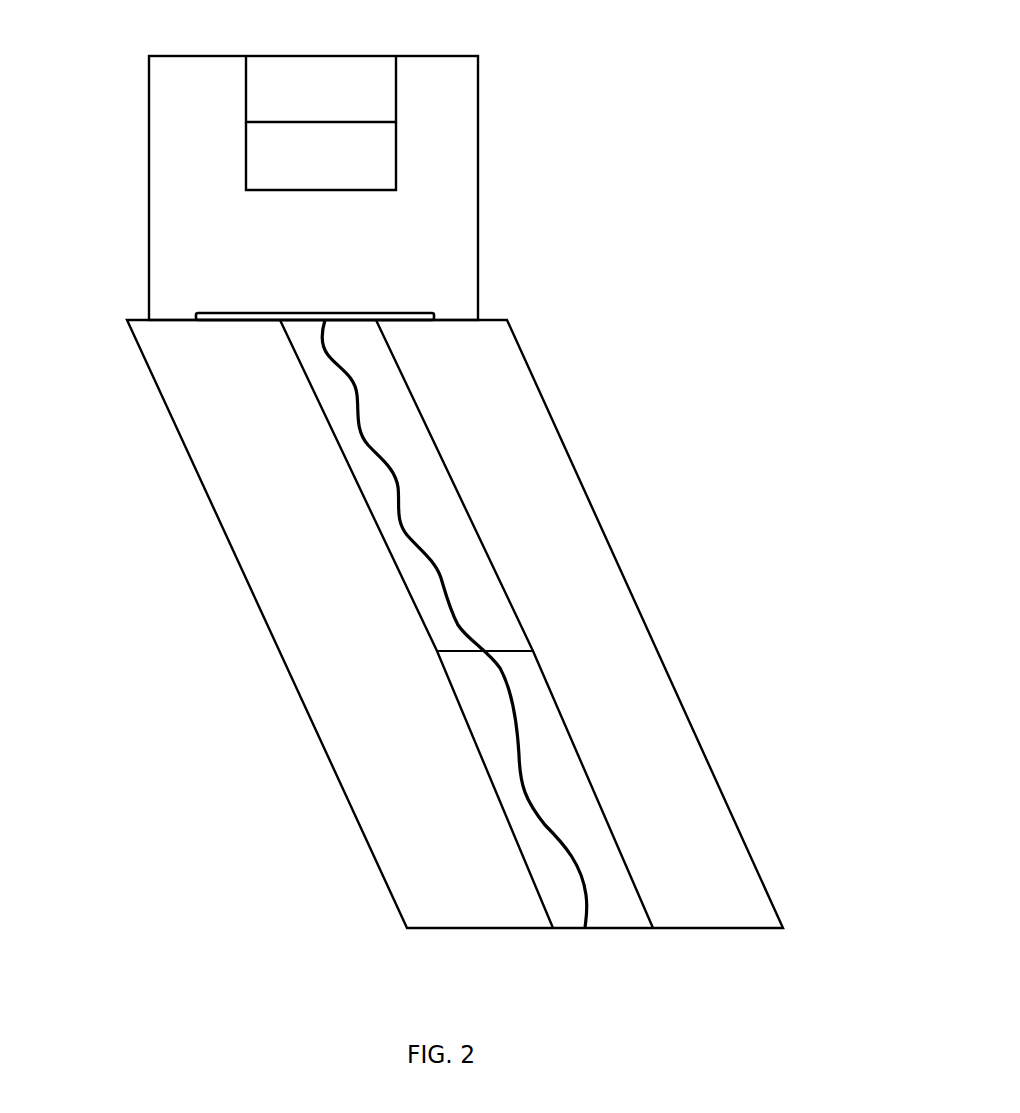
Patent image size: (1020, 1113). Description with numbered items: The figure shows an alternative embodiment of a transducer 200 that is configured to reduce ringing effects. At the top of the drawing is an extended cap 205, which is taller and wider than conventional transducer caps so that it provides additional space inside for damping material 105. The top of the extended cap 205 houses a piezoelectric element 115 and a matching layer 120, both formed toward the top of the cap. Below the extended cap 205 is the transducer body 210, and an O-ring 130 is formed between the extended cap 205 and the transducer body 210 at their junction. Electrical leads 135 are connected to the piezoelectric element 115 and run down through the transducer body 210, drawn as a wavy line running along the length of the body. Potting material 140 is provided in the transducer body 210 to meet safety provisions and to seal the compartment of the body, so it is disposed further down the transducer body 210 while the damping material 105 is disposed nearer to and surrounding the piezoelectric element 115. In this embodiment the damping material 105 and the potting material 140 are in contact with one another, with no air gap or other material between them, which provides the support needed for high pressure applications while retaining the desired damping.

The transducer 200 is at (710, 130).
The extended cap 205 is at (482, 261).
The matching layer 120 is at (276, 80).
The piezoelectric element 115 is at (271, 168).
The O-ring 130 is at (227, 323).
The transducer body 210 is at (570, 446).
The damping material 105 is at (363, 482).
The potting material 140 is at (627, 834).
The electrical leads 135 is at (468, 636).